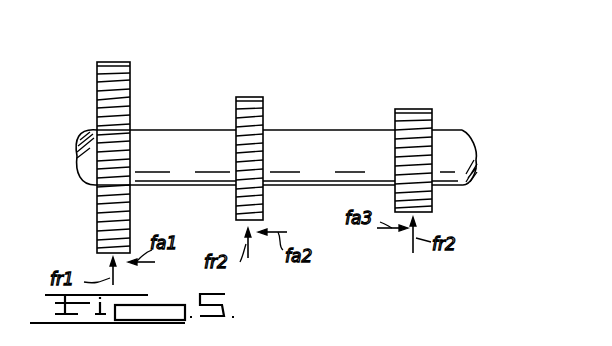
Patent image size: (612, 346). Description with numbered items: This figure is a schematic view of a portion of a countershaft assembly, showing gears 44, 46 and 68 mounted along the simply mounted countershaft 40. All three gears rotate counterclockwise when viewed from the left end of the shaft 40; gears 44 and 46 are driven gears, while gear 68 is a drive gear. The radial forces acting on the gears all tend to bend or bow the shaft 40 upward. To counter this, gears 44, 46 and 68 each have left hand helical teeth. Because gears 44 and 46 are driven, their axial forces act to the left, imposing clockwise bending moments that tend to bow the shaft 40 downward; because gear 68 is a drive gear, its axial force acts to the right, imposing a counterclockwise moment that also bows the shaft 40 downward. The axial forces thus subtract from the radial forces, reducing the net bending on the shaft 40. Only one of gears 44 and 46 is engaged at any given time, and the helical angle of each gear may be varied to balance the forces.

The countershaft 40 is at (455, 130).
The driven gear 44 is at (111, 62).
The driven gear 46 is at (245, 97).
The drive gear 68 is at (420, 108).